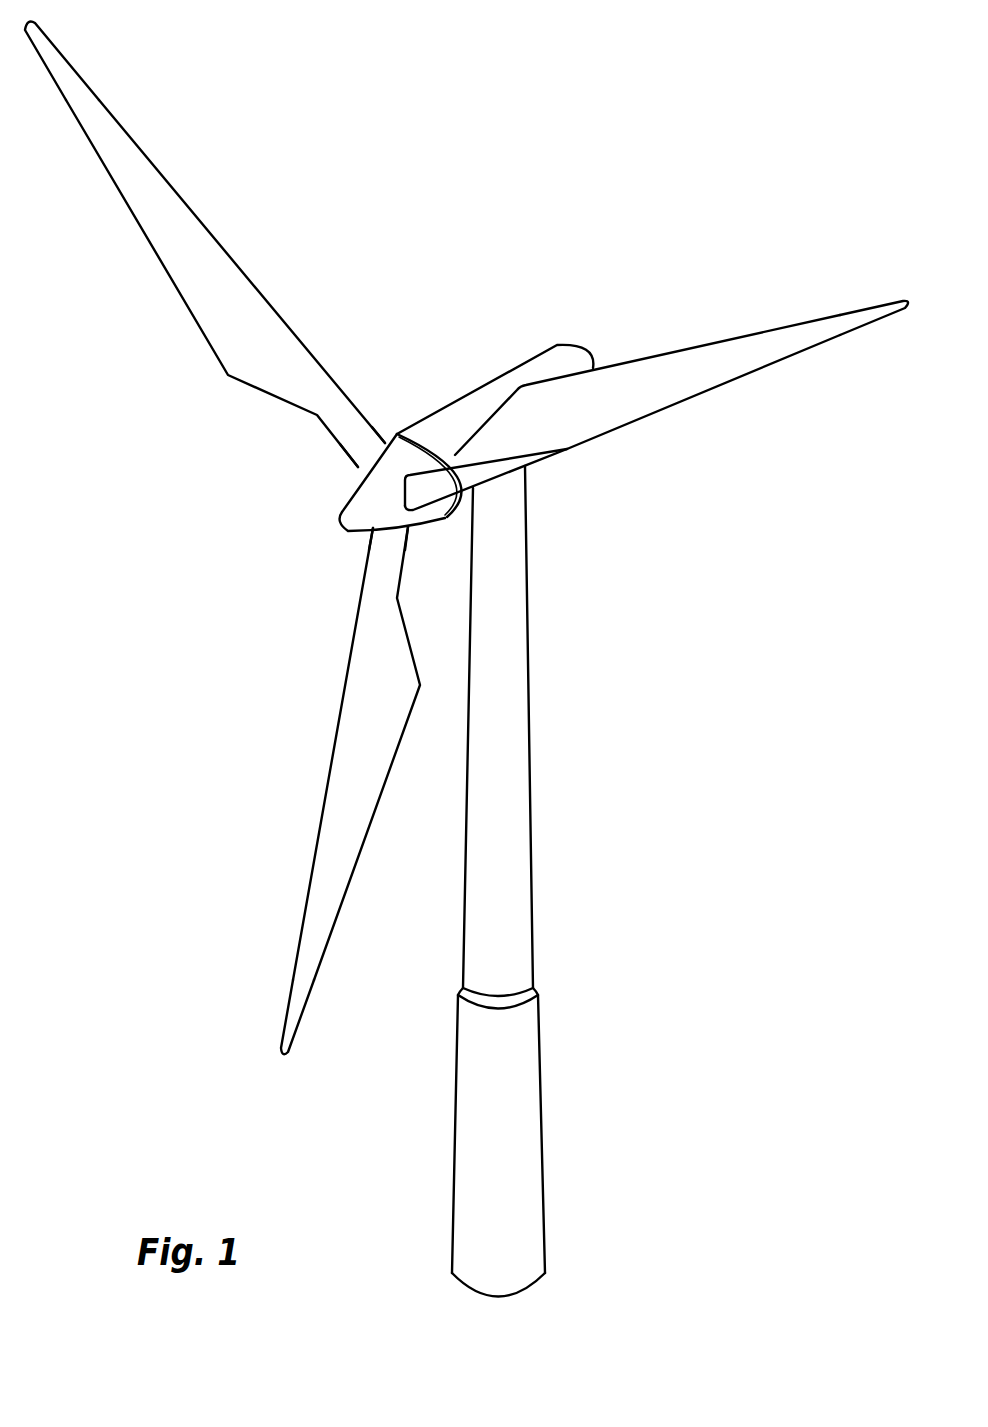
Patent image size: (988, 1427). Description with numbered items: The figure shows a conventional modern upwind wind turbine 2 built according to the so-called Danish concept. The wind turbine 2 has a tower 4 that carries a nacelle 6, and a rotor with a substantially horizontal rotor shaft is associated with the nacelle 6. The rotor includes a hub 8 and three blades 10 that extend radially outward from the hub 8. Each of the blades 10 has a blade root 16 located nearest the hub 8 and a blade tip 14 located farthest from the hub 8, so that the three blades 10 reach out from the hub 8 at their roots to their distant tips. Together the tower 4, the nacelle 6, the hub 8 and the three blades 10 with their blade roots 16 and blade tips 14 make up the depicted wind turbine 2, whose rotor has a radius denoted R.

The wind turbine 2 is at (645, 817).
The tower 4 is at (518, 733).
The nacelle 6 is at (463, 412).
The hub 8 is at (360, 503).
The blade 10 is at (240, 342).
The blade tip 14 is at (72, 82).
The blade root 16 is at (368, 462).